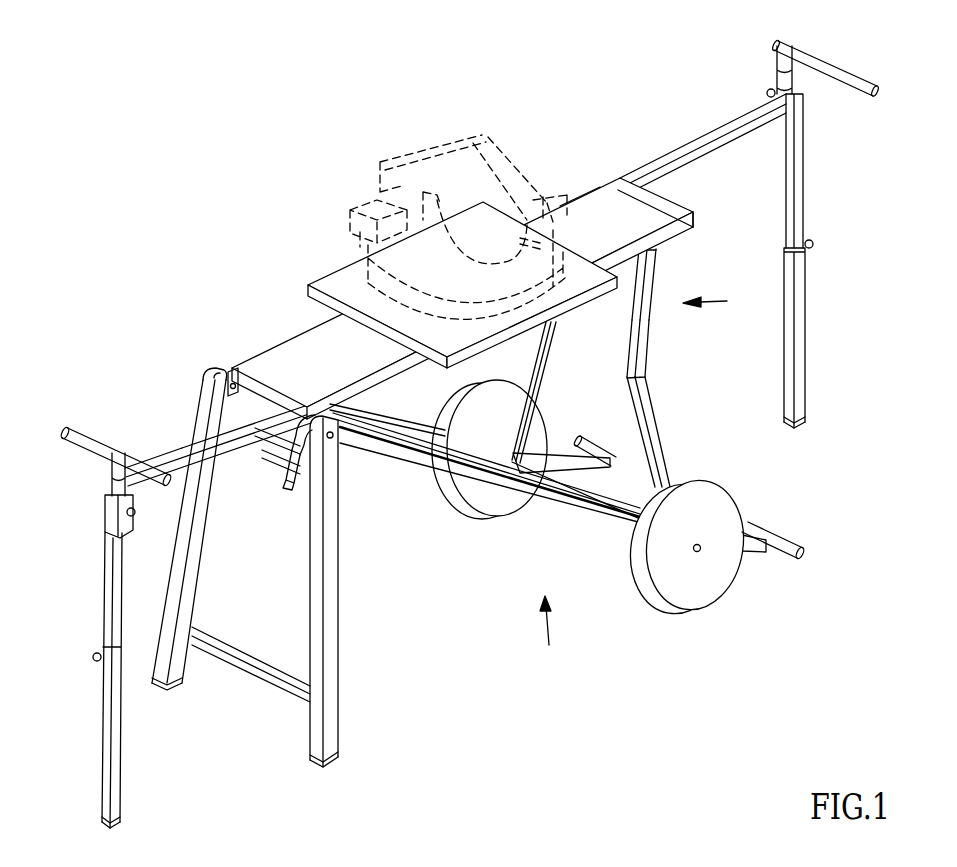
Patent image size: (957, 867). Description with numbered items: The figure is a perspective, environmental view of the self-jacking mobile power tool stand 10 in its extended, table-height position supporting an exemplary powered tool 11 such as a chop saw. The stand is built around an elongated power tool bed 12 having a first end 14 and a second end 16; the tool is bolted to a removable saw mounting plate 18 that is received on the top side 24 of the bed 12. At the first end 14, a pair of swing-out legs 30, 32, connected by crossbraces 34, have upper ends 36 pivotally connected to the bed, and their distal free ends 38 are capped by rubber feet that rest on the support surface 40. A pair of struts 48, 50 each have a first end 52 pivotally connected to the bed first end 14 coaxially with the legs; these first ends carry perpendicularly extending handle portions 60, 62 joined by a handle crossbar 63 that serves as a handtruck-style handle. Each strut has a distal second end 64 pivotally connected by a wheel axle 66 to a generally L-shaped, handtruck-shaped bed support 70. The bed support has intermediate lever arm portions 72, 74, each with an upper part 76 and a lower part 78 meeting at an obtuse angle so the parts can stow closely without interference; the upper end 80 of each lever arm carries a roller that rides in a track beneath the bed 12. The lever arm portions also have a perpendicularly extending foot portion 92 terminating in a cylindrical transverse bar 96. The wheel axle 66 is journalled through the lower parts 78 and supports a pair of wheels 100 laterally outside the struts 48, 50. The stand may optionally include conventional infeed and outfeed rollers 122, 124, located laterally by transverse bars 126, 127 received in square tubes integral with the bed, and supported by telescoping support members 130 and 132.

The self-jacking mobile power tool stand 10 is at (539, 632).
The powered tool 11 is at (495, 130).
The power tool bed 12 is at (292, 347).
The first end 14 is at (230, 370).
The second end 16 is at (689, 208).
The saw mounting plate 18 is at (345, 270).
The top side 24 is at (610, 210).
The swing-out leg 30 is at (339, 640).
The swing-out leg 32 is at (174, 558).
The crossbraces 34 is at (250, 665).
The upper ends 36 is at (207, 372).
The distal free ends 38 is at (160, 690).
The support surface 40 is at (494, 582).
The strut 48 is at (413, 458).
The strut 50 is at (400, 428).
The first end 52 is at (274, 463).
The handle portion 60 is at (292, 488).
The handle portion 62 is at (195, 444).
The handle crossbar 63 is at (262, 447).
The distal second end 64 is at (603, 522).
The wheel axle 66 is at (616, 505).
The bed support 70 is at (719, 299).
The intermediate lever arm portion 72 is at (646, 368).
The intermediate lever arm portion 74 is at (563, 322).
The upper part 76 is at (651, 279).
The lower part 78 is at (664, 455).
The upper end 80 is at (660, 251).
The foot portion 92 is at (576, 442).
The transverse bar 96 is at (758, 524).
The wheels 100 is at (483, 498).
The infeed roller 122 is at (847, 90).
The outfeed roller 124 is at (86, 445).
The transverse bar 126 is at (733, 120).
The transverse bar 127 is at (176, 452).
The telescoping support member 130 is at (805, 183).
The telescoping support member 132 is at (102, 613).